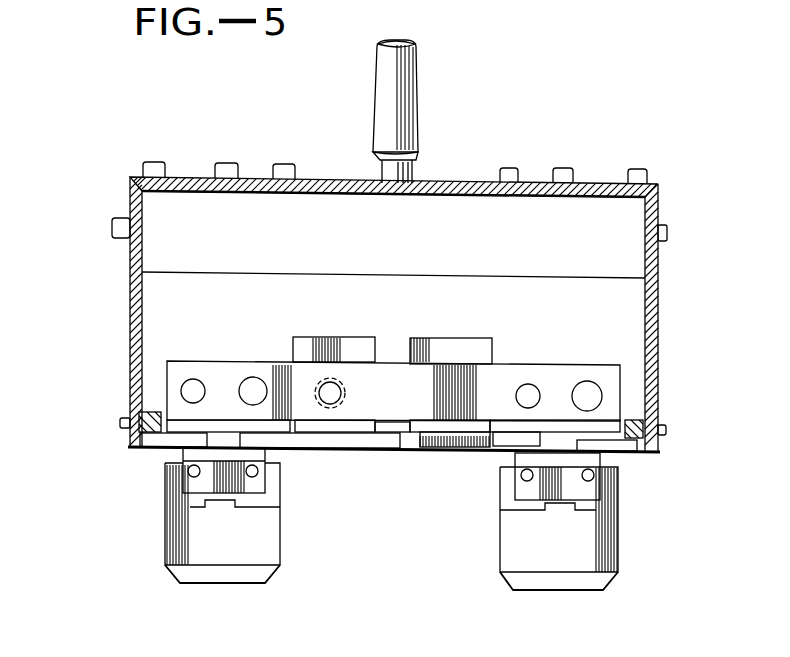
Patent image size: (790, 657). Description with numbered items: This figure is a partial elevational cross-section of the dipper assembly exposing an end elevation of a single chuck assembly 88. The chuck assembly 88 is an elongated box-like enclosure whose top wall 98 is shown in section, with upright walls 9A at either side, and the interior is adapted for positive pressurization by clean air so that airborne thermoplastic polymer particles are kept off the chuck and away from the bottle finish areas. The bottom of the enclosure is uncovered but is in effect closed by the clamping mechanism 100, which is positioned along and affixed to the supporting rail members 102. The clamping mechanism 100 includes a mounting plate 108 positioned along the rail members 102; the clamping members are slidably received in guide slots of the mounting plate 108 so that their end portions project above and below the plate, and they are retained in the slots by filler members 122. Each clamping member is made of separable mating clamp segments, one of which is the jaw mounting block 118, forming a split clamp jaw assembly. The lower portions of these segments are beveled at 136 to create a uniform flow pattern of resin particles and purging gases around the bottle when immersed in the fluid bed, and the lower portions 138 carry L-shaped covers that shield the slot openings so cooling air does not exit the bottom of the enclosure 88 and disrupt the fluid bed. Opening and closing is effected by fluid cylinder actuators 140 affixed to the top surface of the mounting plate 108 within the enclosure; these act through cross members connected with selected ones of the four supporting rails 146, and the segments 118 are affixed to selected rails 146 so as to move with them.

The chuck assembly 88 is at (319, 158).
The top wall 98 is at (191, 176).
The housing side walls 9A is at (128, 254).
The clamping mechanism 100 is at (270, 340).
The supporting rails 146 is at (252, 377).
The fluid cylinder actuator 140 is at (432, 345).
The supporting rail members 102 is at (158, 410).
The filler members 122 is at (207, 437).
The mounting plate 108 is at (375, 452).
The lower portions 138 is at (222, 478).
The jaw mounting block 118 is at (218, 525).
The bevel 136 is at (276, 573).